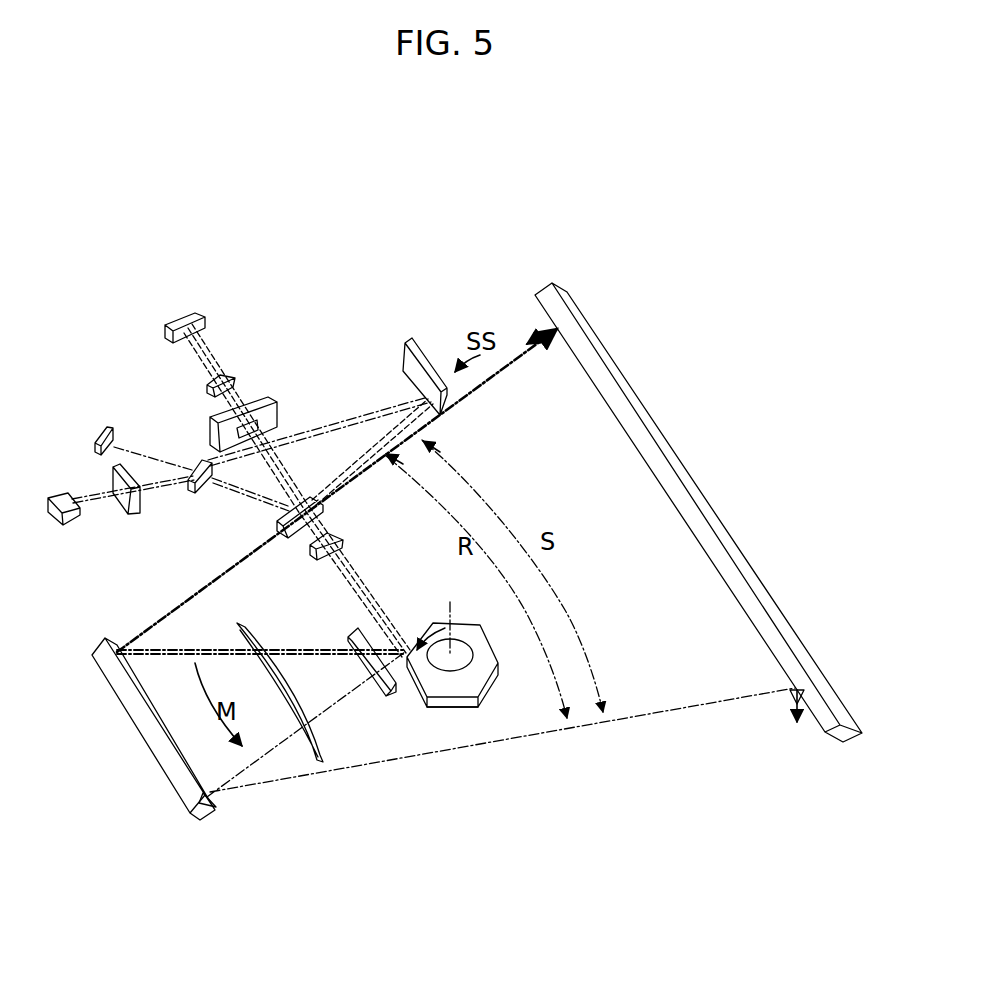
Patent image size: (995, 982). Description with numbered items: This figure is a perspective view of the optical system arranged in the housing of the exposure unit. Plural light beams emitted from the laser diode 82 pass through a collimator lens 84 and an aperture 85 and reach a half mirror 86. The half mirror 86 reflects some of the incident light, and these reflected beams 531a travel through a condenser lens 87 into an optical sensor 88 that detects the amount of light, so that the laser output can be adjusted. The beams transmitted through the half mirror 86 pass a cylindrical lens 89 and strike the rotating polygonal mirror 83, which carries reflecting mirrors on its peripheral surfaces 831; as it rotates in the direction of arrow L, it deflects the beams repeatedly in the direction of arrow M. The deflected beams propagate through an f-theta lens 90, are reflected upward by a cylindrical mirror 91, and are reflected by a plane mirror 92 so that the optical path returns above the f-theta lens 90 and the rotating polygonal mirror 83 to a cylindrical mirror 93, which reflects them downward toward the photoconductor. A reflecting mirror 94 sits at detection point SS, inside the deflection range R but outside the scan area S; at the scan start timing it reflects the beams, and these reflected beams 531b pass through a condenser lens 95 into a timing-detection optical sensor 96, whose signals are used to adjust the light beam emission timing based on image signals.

The laser diode 82 is at (197, 312).
The rotating polygonal mirror 83 is at (458, 630).
The peripheral surfaces 831 is at (458, 698).
The collimator lens 84 is at (222, 372).
The aperture 85 is at (260, 400).
The half mirror 86 is at (303, 503).
The condenser lens 87 is at (193, 460).
The optical sensor 88 is at (100, 426).
The cylindrical lens 89 is at (338, 533).
The f-theta lens 90 is at (347, 633).
The cylindrical mirror 91 is at (218, 803).
The plane mirror 92 is at (163, 750).
The cylindrical mirror 93 is at (541, 291).
The reflecting mirror 94 is at (417, 350).
The condenser lens 95 is at (140, 503).
The timing-detection optical sensor 96 is at (65, 498).
The reflected beams 531a is at (242, 493).
The reflected beams 531b is at (335, 418).